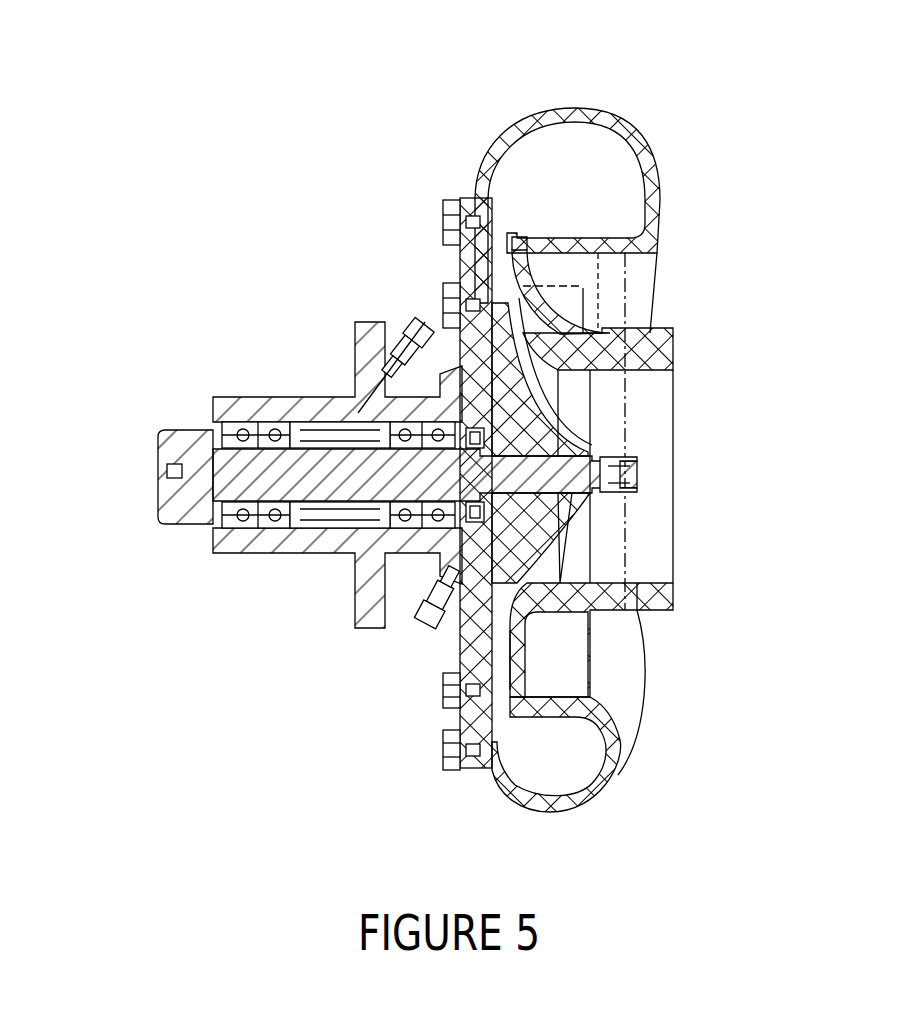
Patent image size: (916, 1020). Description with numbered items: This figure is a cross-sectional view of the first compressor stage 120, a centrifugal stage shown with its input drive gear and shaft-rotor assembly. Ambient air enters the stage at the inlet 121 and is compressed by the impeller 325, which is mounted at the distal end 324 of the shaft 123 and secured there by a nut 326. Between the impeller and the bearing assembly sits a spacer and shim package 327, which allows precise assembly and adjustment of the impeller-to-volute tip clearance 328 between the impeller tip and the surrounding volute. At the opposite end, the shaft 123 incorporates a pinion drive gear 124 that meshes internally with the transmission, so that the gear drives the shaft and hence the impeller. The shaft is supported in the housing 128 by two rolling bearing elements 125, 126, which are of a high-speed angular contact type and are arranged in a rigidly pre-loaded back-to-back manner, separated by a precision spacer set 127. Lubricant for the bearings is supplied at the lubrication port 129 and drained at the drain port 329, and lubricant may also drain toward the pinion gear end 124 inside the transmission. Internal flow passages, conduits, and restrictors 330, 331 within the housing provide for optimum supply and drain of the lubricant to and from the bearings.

The first compressor stage 120 is at (642, 417).
The inlet 121 is at (707, 431).
The shaft 123 is at (386, 543).
The pinion drive gear 124 is at (130, 438).
The bearing element 125 is at (262, 443).
The bearing element 126 is at (338, 400).
The precision spacer set 127 is at (336, 586).
The housing 128 is at (355, 498).
The lubrication port 129 is at (360, 303).
The distal end of the shaft 324 is at (644, 440).
The impeller 325 is at (701, 315).
The nut 326 is at (701, 448).
The spacer and shim package 327 is at (631, 516).
The impeller-to-volute tip clearance 328 is at (653, 670).
The drain port 329 is at (394, 618).
The internal flow passage 330 is at (332, 349).
The internal flow passage 331 is at (717, 620).